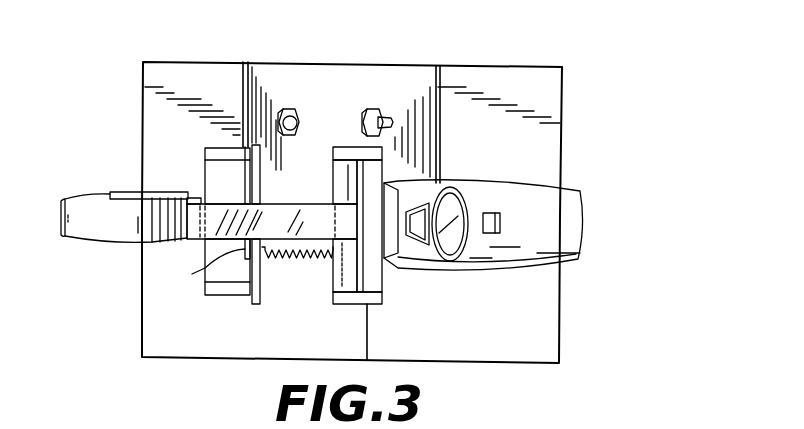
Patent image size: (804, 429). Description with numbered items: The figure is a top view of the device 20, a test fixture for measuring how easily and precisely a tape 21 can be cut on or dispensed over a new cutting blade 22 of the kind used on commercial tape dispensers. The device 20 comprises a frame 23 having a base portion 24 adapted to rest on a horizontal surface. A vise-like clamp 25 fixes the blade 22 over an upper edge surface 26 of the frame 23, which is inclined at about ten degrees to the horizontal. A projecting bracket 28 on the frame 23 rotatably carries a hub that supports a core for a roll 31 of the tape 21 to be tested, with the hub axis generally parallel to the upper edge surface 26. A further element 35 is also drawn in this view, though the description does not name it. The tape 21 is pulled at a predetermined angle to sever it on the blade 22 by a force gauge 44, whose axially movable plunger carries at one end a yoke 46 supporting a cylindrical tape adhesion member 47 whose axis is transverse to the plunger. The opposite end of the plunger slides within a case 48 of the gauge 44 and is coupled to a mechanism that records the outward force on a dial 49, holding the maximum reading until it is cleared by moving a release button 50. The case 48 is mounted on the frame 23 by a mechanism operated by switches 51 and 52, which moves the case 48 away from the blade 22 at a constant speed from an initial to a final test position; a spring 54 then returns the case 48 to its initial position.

The device 20 is at (499, 52).
The tape 21 is at (298, 212).
The cutting blade 22 is at (250, 186).
The frame 23 is at (568, 81).
The base portion 24 is at (562, 336).
The vise-like clamp 25 is at (247, 172).
The upper edge surface 26 is at (252, 293).
The projecting bracket 28 is at (192, 199).
The roll 31 is at (73, 228).
The spring 35 is at (197, 276).
The force gauge 44 is at (456, 276).
The yoke 46 is at (348, 300).
The tape adhesion member 47 is at (338, 273).
The case 48 is at (520, 270).
The dial 49 is at (457, 192).
The release button 50 is at (496, 213).
The switch 51 is at (289, 114).
The switch 52 is at (385, 117).
The spring 54 is at (285, 259).